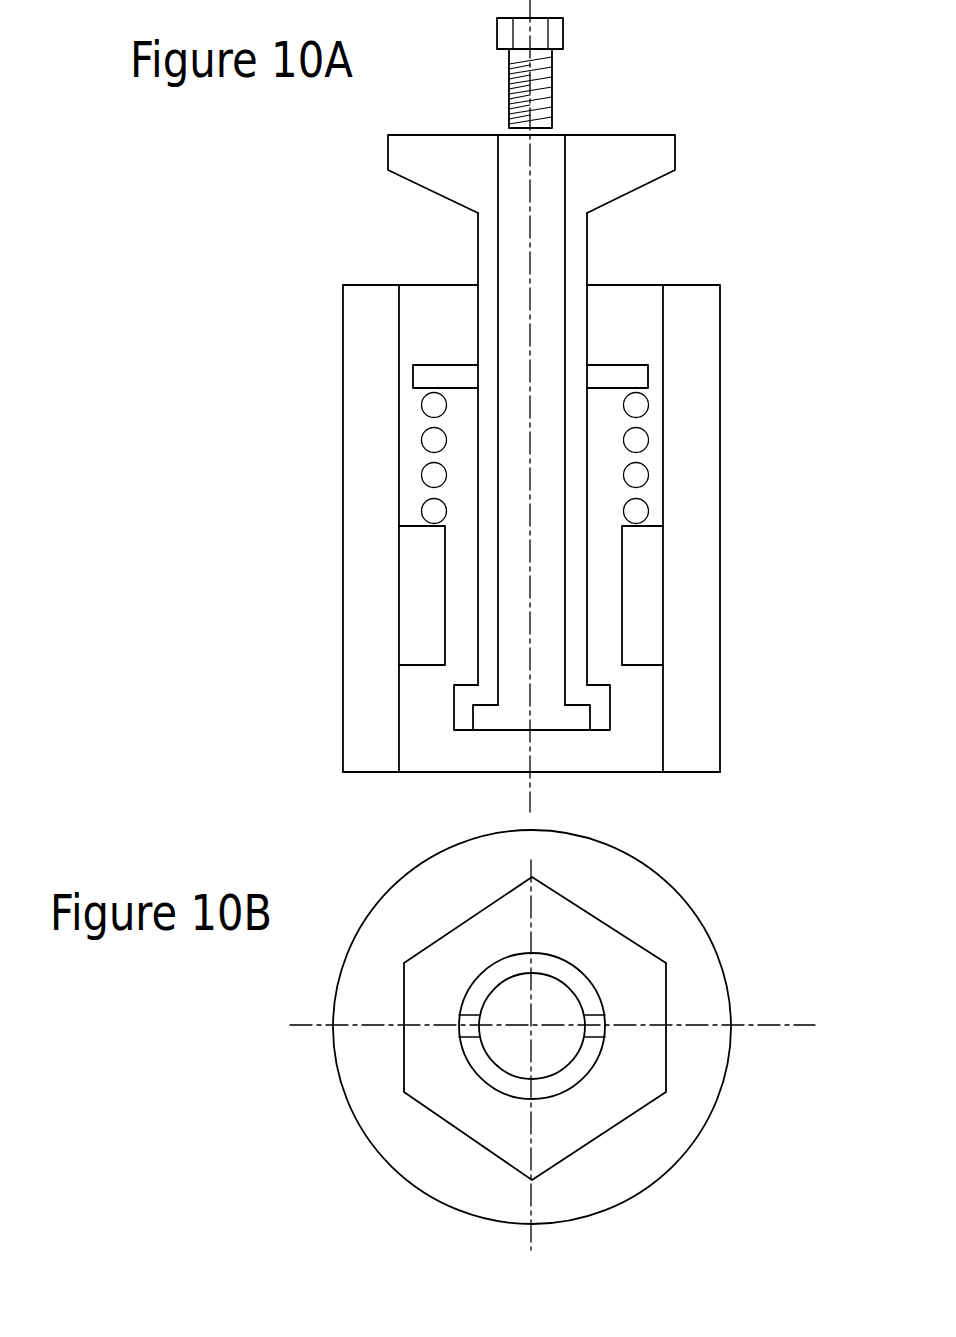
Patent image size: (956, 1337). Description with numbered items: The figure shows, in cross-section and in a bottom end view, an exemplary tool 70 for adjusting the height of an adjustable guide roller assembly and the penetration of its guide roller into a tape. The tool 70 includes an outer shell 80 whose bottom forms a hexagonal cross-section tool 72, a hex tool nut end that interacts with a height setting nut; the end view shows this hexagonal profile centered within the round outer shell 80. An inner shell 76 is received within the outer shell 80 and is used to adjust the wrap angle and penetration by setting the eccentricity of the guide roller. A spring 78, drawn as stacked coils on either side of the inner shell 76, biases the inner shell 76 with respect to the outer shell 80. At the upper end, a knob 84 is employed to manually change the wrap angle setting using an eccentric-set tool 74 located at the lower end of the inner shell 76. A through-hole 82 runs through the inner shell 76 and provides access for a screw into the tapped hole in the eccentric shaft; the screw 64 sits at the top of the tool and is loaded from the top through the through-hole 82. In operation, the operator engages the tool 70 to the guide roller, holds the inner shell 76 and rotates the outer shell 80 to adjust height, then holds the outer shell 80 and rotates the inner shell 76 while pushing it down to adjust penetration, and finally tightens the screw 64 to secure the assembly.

The screw 64 is at (552, 68).
The tool 70 is at (252, 643).
The hexagonal cross-section tool 72 is at (718, 772).
The eccentric-set tool 74 is at (612, 723).
The inner shell 76 is at (583, 592).
The spring 78 is at (643, 465).
The outer shell 80 is at (712, 358).
The through-hole 82 is at (553, 258).
The knob 84 is at (675, 150).